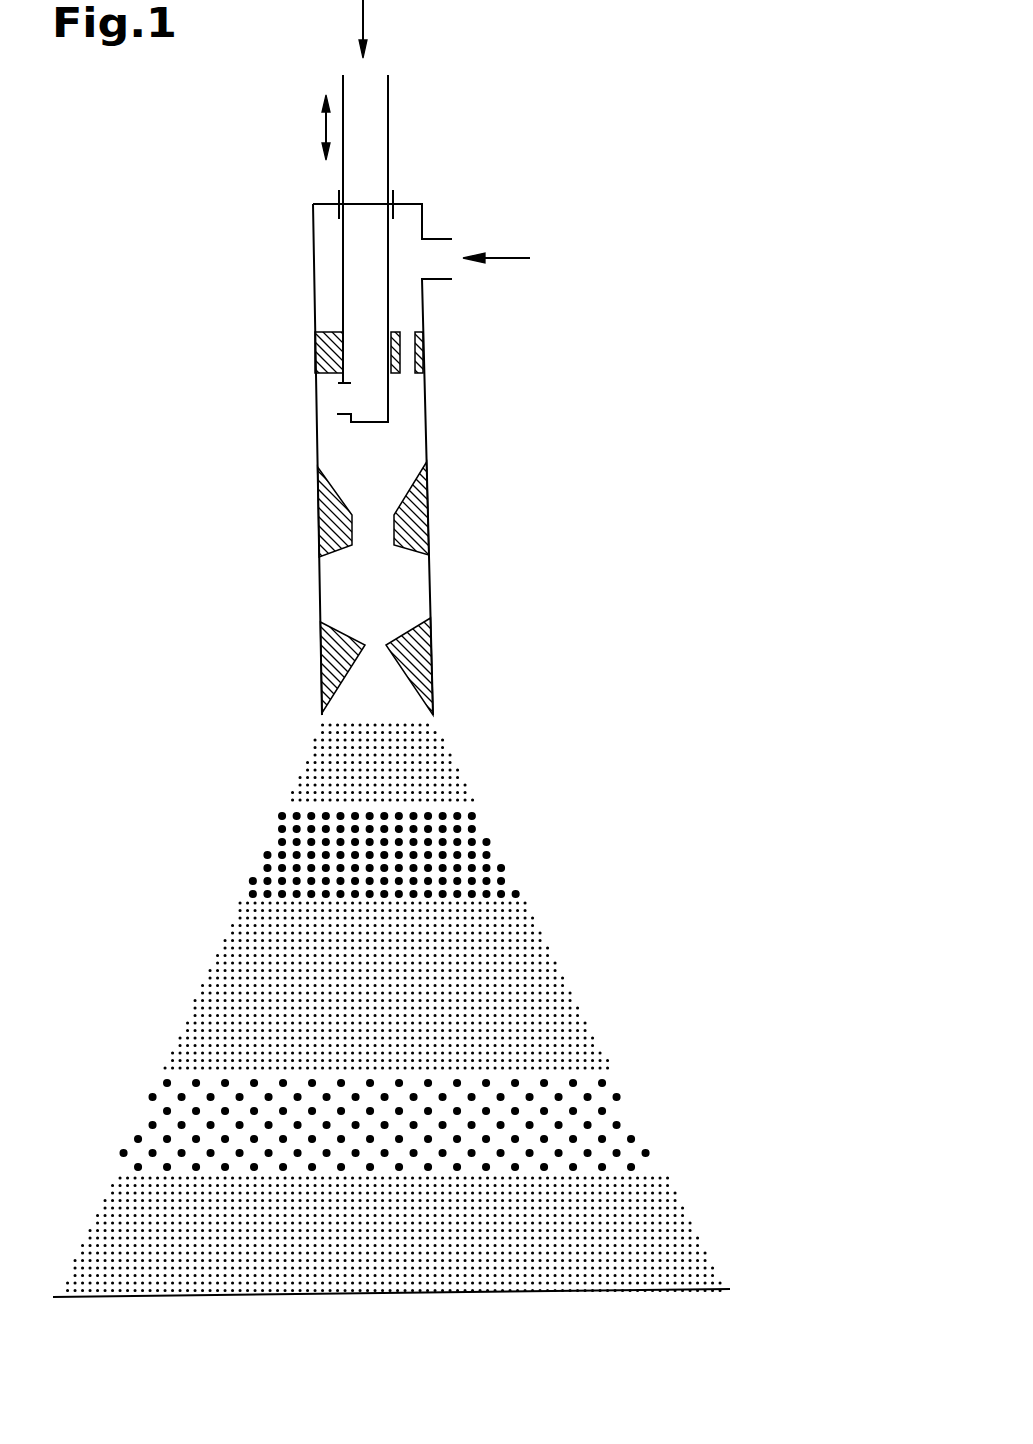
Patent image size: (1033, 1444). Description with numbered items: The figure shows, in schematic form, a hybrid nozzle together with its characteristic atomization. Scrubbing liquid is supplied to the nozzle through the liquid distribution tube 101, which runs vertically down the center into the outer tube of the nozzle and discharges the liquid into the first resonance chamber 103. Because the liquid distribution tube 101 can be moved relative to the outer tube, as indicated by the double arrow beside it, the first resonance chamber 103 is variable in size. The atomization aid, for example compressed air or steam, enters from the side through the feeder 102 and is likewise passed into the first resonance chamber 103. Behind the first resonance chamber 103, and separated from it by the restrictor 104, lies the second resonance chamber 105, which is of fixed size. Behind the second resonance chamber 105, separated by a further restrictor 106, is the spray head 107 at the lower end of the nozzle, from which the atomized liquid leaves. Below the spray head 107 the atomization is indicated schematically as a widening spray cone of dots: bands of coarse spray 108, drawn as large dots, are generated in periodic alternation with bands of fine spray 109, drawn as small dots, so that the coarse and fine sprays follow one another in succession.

The liquid distribution tube 101 is at (365, 104).
The feeder 102 is at (437, 261).
The first resonance chamber 103 is at (345, 447).
The restrictor 104 is at (331, 527).
The second resonance chamber 105 is at (360, 593).
The restrictor 106 is at (338, 668).
The spray head 107 is at (370, 702).
The coarse spray 108 is at (440, 827).
The fine spray 109 is at (498, 955).